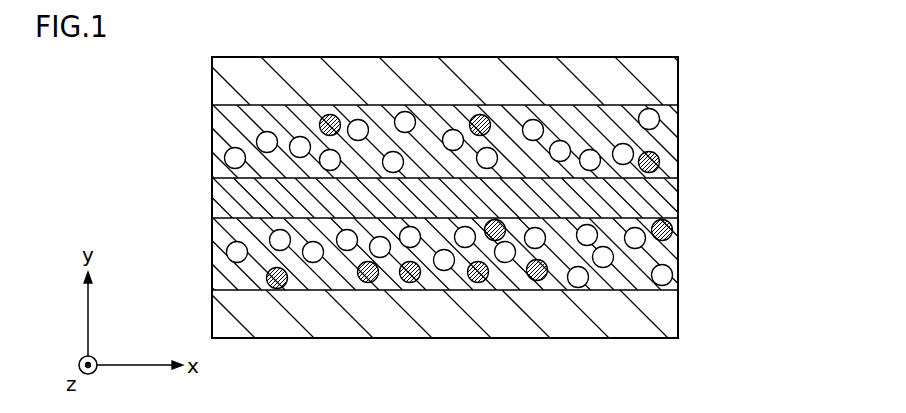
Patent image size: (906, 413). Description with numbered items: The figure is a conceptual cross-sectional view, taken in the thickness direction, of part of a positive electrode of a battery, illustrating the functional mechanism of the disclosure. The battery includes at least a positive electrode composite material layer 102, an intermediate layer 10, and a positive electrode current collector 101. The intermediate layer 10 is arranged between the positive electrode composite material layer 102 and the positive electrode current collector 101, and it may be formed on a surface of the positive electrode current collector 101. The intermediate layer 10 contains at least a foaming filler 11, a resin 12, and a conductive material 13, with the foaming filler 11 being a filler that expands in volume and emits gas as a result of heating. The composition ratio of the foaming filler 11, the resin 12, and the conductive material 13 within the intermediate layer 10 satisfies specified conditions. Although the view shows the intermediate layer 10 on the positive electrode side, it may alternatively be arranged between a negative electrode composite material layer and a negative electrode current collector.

The intermediate layer 10 is at (460, 197).
The foaming filler 11 is at (658, 119).
The resin 12 is at (664, 141).
The conductive material 13 is at (740, 102).
The positive electrode current collector 101 is at (672, 200).
The positive electrode composite material layer 102 is at (673, 83).